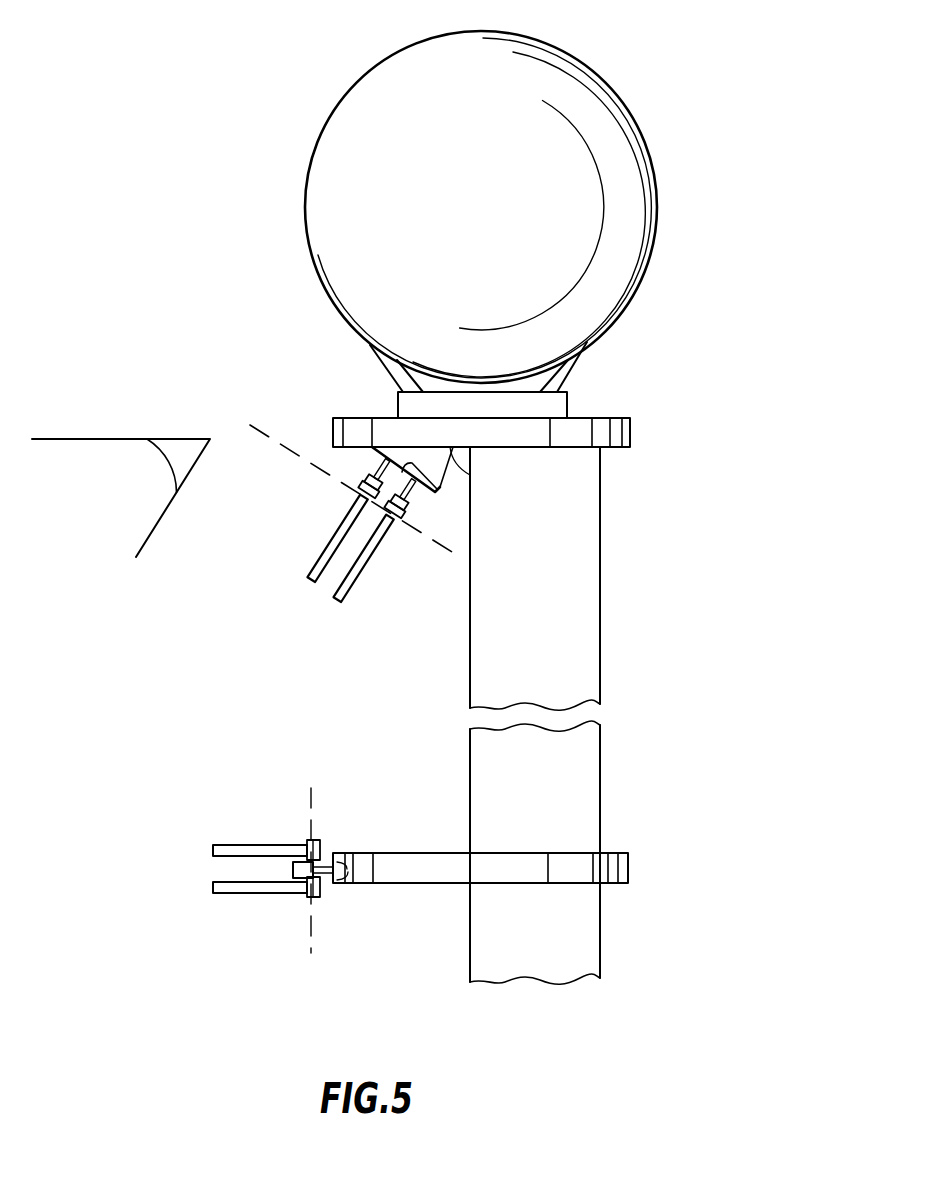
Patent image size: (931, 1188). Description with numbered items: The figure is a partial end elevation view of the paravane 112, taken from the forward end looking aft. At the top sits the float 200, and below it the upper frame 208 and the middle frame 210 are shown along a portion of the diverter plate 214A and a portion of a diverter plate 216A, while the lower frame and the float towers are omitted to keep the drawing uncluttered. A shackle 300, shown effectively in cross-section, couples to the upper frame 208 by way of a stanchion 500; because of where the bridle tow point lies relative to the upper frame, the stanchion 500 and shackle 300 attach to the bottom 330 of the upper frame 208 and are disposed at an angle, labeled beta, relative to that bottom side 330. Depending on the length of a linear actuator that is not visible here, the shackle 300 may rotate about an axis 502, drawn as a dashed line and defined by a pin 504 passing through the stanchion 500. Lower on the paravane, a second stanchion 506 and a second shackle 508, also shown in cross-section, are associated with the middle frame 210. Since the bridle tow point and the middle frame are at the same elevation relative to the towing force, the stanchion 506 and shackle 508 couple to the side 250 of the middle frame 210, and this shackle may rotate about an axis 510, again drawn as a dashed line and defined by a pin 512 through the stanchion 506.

The paravane 112 is at (690, 66).
The float 200 is at (473, 218).
The upper frame 208 is at (632, 427).
The diverter plate 214A is at (564, 625).
The lower mast section 216A is at (570, 920).
The middle frame 210 is at (630, 868).
The side of the middle frame 250 is at (337, 882).
The shackle 300 is at (338, 598).
The bottom of the upper frame 330 is at (448, 467).
The stanchion 500 is at (459, 463).
The axis 502 is at (268, 432).
The pin 504 is at (405, 525).
The stanchion 506 is at (336, 865).
The shackle 508 is at (227, 845).
The axis 510 is at (313, 803).
The pin 512 is at (307, 893).